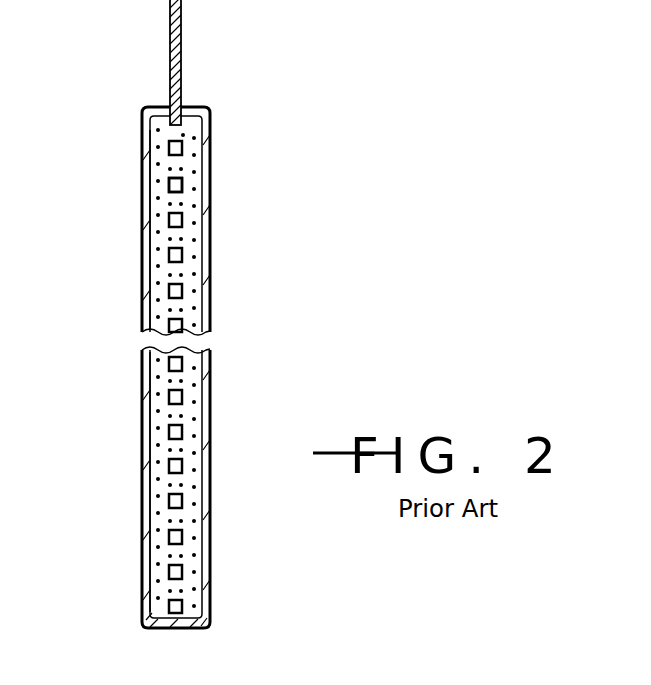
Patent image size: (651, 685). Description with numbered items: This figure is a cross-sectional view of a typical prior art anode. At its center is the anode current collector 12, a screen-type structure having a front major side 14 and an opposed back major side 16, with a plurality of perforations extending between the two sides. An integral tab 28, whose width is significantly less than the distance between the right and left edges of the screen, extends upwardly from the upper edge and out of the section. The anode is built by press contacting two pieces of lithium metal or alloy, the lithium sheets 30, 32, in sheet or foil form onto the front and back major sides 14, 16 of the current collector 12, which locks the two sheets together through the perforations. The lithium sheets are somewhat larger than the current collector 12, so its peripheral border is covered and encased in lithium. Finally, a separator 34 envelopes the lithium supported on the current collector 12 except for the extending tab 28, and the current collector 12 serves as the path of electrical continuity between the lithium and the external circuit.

The anode current collector 12 is at (181, 223).
The front major side 14 is at (183, 148).
The back major side 16 is at (168, 189).
The integral tab 28 is at (180, 25).
The lithium sheet 30 is at (201, 251).
The lithium sheet 32 is at (149, 237).
The separator 34 is at (211, 302).